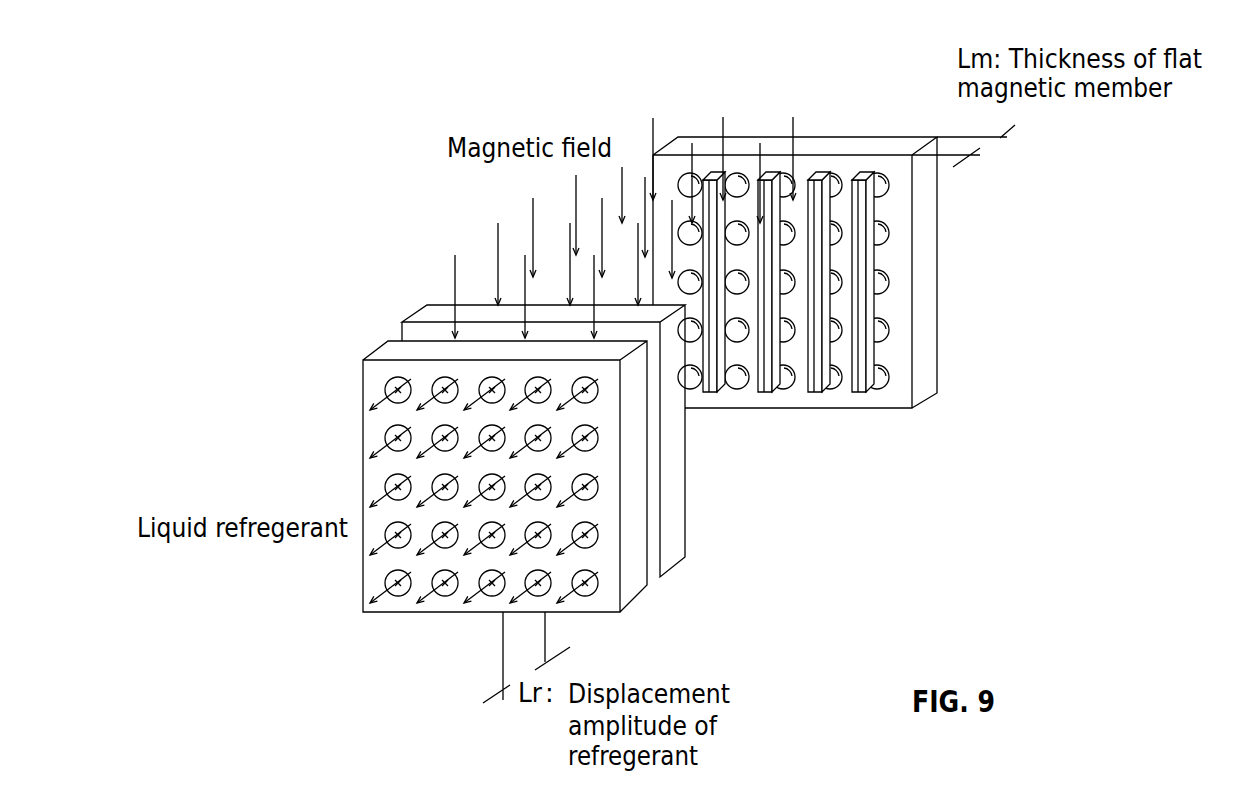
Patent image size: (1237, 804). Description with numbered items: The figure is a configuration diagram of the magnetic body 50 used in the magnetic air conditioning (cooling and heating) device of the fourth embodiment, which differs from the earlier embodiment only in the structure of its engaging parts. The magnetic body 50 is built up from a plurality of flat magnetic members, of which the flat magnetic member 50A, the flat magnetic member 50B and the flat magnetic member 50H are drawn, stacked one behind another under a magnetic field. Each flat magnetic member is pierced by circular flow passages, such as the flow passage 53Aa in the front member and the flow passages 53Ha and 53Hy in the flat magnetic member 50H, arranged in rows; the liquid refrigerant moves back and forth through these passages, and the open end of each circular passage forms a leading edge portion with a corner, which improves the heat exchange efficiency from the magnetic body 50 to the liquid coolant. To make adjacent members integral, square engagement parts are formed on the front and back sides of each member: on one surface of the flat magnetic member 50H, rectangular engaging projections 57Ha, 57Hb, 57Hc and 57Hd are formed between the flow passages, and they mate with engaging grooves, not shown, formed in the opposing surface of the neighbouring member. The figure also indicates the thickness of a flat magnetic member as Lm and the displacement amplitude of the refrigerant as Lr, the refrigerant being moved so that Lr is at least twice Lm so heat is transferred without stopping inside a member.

The magnetic body 50 is at (348, 130).
The flat magnetic member 50A is at (501, 476).
The flat magnetic member 50B is at (686, 542).
The flat magnetic member 50H is at (832, 289).
The flow passage 53Aa is at (387, 387).
The flow passage 53Ha is at (688, 173).
The flow passage 53Hy is at (880, 388).
The engaging projection 57Ha is at (850, 395).
The engaging projection 57Hb is at (800, 395).
The engaging projection 57Hc is at (757, 395).
The engaging projection 57Hd is at (708, 395).